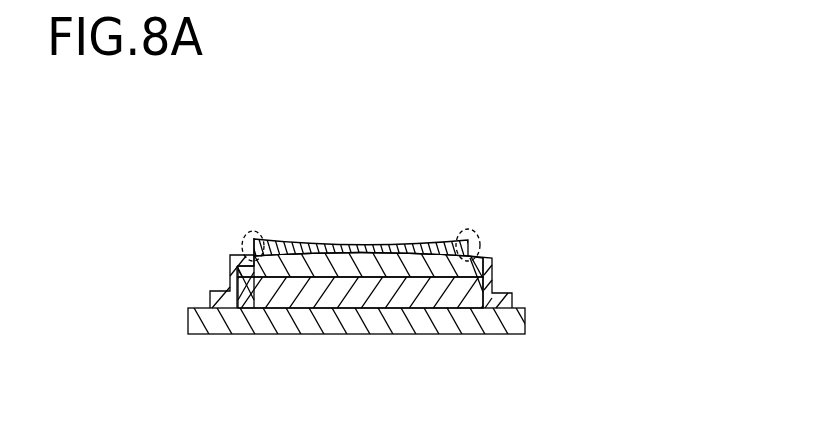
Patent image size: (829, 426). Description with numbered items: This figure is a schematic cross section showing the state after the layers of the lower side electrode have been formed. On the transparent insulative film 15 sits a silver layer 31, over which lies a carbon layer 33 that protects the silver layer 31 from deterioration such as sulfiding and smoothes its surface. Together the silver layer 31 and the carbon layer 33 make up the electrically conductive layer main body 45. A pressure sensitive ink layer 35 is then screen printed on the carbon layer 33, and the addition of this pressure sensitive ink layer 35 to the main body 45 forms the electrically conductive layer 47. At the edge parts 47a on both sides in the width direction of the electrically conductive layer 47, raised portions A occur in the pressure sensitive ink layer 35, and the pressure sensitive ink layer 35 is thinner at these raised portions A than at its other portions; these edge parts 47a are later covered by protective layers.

The transparent insulative film 15 is at (363, 335).
The silver layer 31 is at (318, 268).
The carbon layer 33 is at (356, 268).
The pressure sensitive ink layer 35 is at (395, 248).
The electrically conductive layer main body 45 is at (360, 226).
The electrically conductive layer 47 is at (354, 209).
The edge parts 47a is at (226, 255).
The raised portions A is at (255, 235).